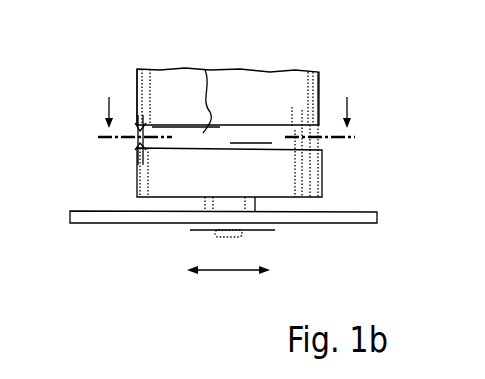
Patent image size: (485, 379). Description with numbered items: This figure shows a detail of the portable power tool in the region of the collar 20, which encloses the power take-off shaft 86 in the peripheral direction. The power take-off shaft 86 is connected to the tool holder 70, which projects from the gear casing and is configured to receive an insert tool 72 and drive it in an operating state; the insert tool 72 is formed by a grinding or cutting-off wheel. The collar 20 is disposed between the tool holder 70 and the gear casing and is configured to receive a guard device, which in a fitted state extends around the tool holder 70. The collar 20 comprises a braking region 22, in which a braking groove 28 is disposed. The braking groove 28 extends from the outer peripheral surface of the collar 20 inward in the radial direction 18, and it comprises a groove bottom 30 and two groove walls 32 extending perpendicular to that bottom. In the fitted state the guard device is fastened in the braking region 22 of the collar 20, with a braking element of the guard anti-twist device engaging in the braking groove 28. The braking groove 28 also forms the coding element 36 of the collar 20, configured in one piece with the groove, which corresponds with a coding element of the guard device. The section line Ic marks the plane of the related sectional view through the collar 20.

The radial direction 18 is at (228, 273).
The collar 20 is at (268, 92).
The braking region 22 is at (328, 126).
The braking groove 28 is at (187, 77).
The coding element 36 is at (205, 70).
The groove walls 32 is at (136, 125).
The groove bottom 30 is at (322, 150).
The section line Ic is at (228, 116).
The tool holder 70 is at (280, 231).
The insert tool 72 is at (360, 224).
The power take-off shaft 86 is at (207, 203).